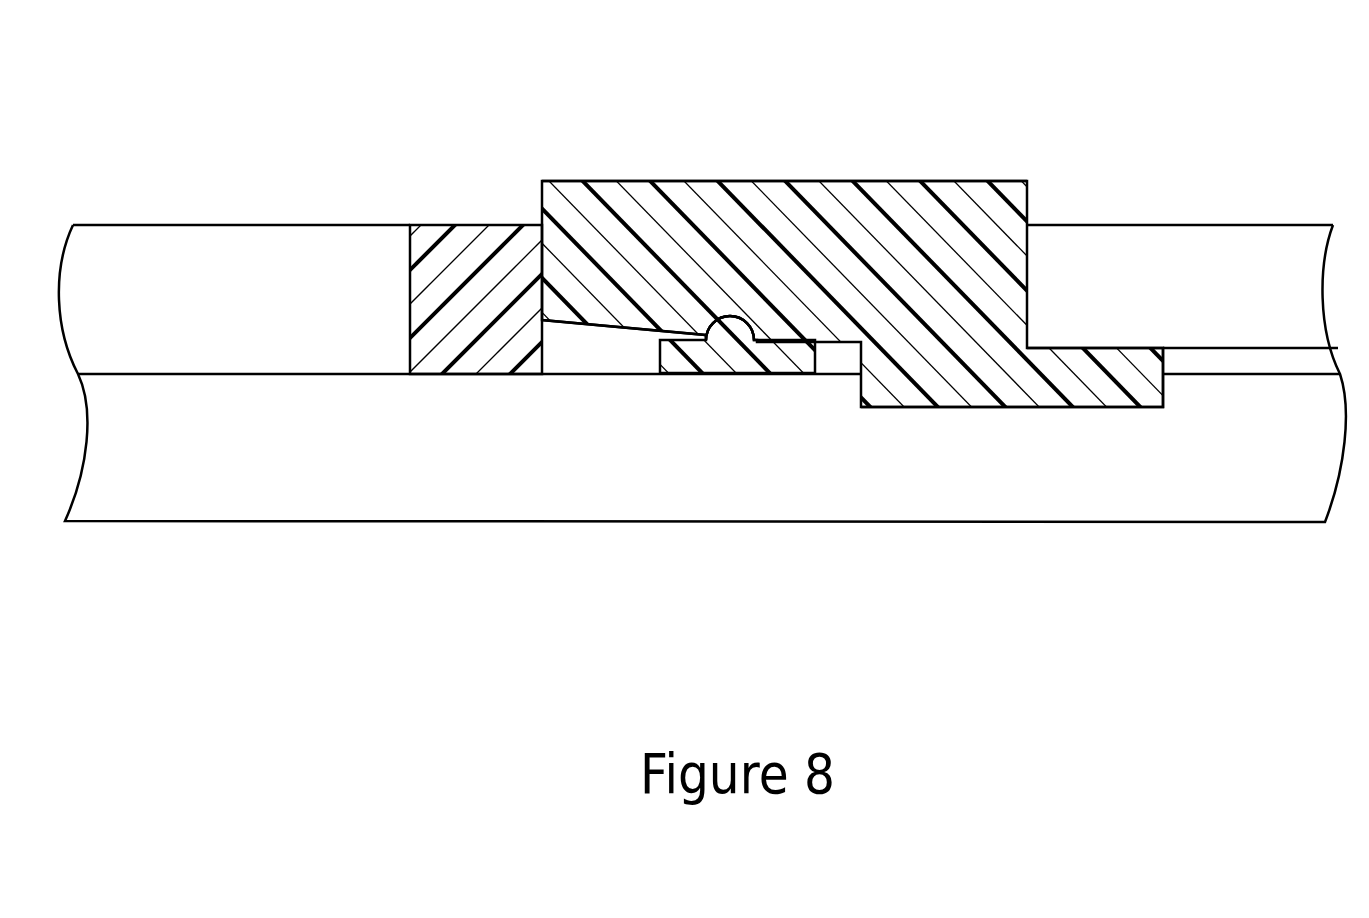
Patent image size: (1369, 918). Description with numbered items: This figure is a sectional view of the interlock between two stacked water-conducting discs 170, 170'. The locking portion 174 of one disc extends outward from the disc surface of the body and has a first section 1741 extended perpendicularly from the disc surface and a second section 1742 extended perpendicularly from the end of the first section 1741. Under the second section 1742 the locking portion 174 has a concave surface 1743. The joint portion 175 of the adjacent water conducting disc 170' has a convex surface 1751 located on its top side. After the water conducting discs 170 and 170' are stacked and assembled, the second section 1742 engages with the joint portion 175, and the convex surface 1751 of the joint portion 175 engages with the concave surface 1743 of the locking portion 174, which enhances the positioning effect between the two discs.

The water-conducting disc 170 is at (702, 458).
The adjacent water conducting disc 170' is at (705, 206).
The locking portion 174 is at (897, 165).
The first section 1741 is at (972, 343).
The second section 1742 is at (618, 198).
The concave surface 1743 is at (710, 312).
The joint portion 175 is at (740, 358).
The convex surface 1751 is at (732, 323).